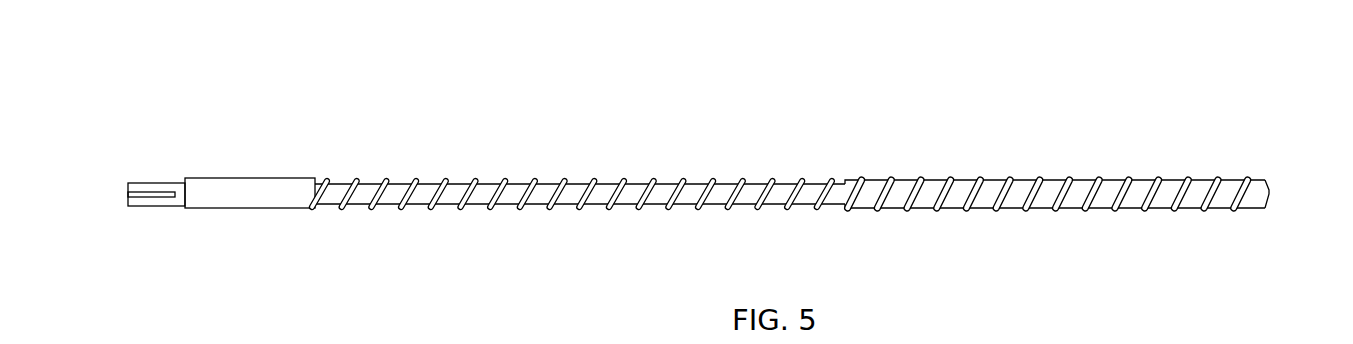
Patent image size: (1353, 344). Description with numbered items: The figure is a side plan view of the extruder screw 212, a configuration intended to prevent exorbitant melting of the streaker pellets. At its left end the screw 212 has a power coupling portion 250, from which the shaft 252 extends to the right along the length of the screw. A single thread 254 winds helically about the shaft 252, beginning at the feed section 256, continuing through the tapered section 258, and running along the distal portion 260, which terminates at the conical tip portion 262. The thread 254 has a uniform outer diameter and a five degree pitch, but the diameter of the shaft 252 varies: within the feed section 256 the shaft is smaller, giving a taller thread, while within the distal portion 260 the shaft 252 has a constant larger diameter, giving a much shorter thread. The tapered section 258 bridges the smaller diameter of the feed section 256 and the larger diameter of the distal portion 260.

The screw 212 is at (218, 82).
The power coupling portion 250 is at (235, 152).
The shaft 252 is at (503, 207).
The thread 254 is at (536, 182).
The feed section 256 is at (445, 160).
The tapered section 258 is at (707, 152).
The distal portion 260 is at (1125, 152).
The conical tip portion 262 is at (1269, 192).